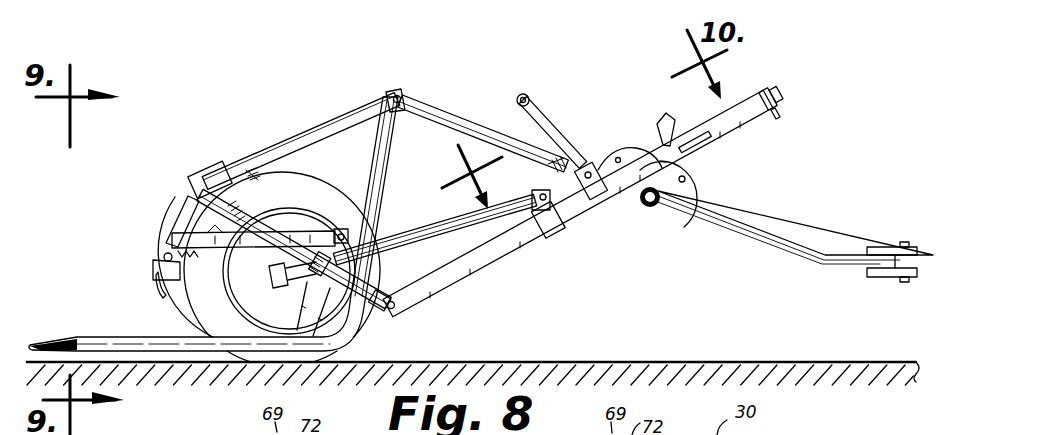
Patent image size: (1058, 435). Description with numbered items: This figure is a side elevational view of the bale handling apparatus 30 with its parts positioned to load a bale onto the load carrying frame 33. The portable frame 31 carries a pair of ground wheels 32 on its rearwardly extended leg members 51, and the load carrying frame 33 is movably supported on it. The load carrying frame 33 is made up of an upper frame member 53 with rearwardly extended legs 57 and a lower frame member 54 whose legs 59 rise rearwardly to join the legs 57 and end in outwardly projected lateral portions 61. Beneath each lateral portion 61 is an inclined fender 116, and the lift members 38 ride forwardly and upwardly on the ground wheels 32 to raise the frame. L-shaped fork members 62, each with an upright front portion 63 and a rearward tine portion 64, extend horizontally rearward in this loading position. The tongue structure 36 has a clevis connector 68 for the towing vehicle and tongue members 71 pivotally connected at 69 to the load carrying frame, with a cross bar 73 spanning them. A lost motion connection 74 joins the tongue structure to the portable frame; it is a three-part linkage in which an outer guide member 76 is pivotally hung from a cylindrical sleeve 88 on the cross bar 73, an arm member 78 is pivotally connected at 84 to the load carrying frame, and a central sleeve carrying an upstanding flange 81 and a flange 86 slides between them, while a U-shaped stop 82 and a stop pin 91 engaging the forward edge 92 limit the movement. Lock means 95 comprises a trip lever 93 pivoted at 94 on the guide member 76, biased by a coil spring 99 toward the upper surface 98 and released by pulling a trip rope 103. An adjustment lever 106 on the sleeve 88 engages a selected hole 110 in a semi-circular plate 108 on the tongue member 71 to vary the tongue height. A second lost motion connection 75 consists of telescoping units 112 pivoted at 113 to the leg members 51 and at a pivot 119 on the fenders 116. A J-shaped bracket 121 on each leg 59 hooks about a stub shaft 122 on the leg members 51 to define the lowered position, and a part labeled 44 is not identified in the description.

The apparatus 30 is at (484, 77).
The portable frame 31 is at (448, 252).
The ground wheels 32 is at (278, 355).
The load carrying frame 33 is at (328, 108).
The tongue structure 36 is at (793, 226).
The lift members 38 is at (158, 205).
The latch hook 44 is at (160, 298).
The leg members 51 is at (426, 235).
The upper frame member 53 is at (378, 93).
The lower frame member 54 is at (376, 314).
The legs 57 is at (302, 137).
The legs 59 is at (270, 242).
The lateral portions 61 is at (196, 190).
The fork members 62 is at (72, 333).
The front portion 63 is at (390, 157).
The tine portion 64 is at (173, 352).
The clevis connector 68 is at (888, 277).
The pivotal connection 69 is at (400, 95).
The tongue members 71 is at (460, 117).
The cross bar 73 is at (650, 208).
The lost motion connection 74 is at (592, 240).
The lost motion connection 75 is at (214, 258).
The outer guide member 76 is at (600, 200).
The arm member 78 is at (498, 260).
The flange 81 is at (737, 96).
The stop 82 is at (778, 97).
The pivotal connection 84 is at (396, 307).
The flange 86 is at (552, 232).
The cylindrical sleeve 88 is at (668, 212).
The stop pin 91 is at (773, 114).
The forward edge 92 is at (757, 95).
The trip lever 93 is at (526, 95).
The pivot 94 is at (592, 164).
The lock means 95 is at (578, 122).
The upper surface 98 is at (560, 195).
The coil spring 99 is at (461, 173).
The trip rope 103 is at (550, 100).
The lever 106 is at (662, 122).
The semi-circular plate 108 is at (702, 186).
The adjustment hole 110 is at (686, 171).
The telescoping units 112 is at (165, 226).
The pivotal connection 113 is at (342, 228).
The fender 116 is at (207, 165).
The pivot 119 is at (165, 255).
The J-shaped bracket 121 is at (318, 283).
The stub shafts 122 is at (297, 270).